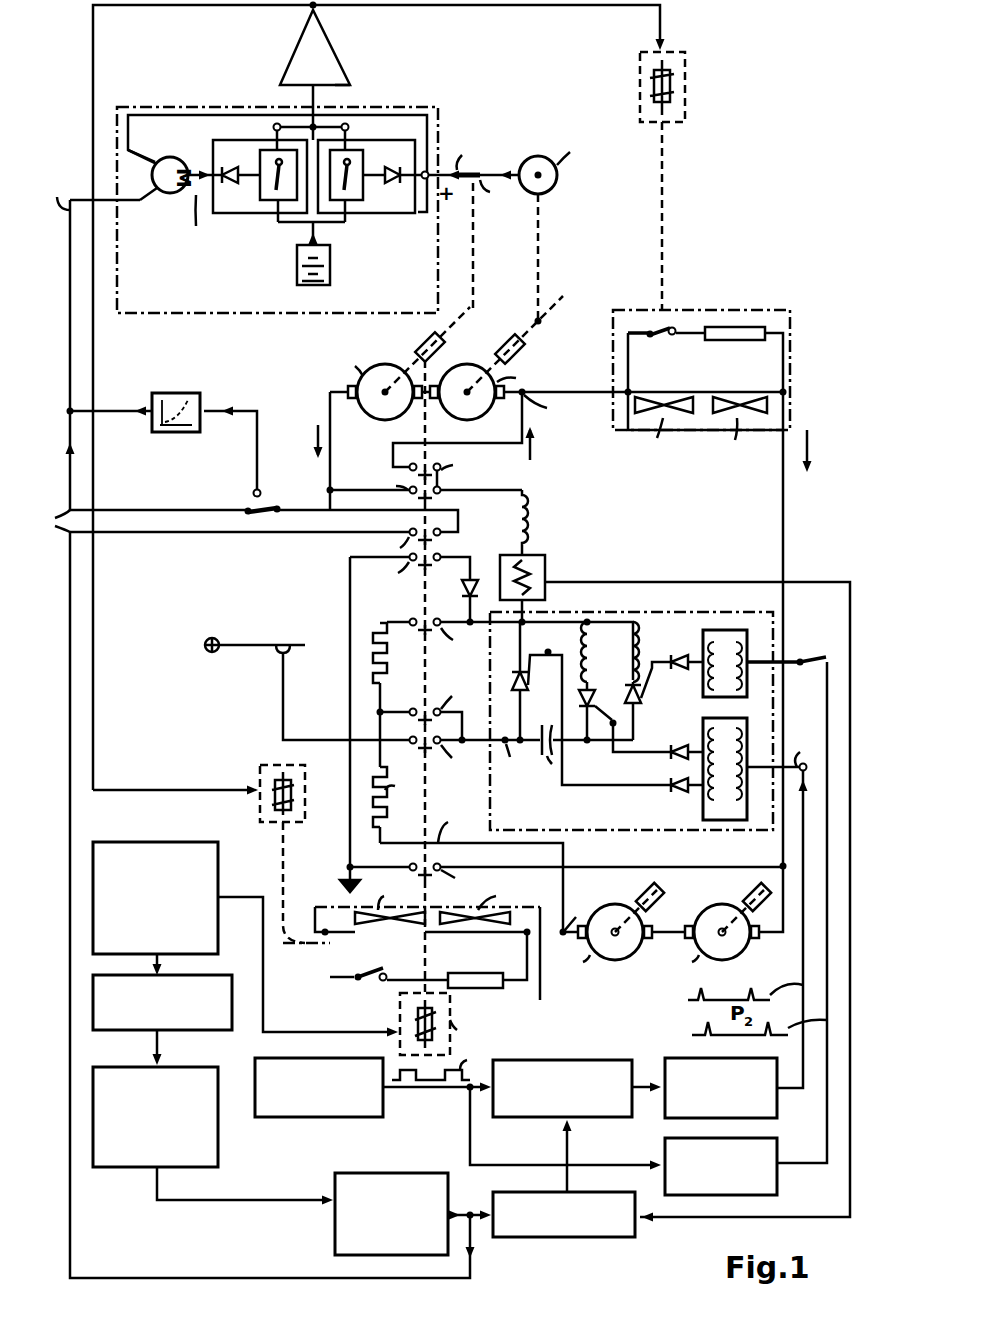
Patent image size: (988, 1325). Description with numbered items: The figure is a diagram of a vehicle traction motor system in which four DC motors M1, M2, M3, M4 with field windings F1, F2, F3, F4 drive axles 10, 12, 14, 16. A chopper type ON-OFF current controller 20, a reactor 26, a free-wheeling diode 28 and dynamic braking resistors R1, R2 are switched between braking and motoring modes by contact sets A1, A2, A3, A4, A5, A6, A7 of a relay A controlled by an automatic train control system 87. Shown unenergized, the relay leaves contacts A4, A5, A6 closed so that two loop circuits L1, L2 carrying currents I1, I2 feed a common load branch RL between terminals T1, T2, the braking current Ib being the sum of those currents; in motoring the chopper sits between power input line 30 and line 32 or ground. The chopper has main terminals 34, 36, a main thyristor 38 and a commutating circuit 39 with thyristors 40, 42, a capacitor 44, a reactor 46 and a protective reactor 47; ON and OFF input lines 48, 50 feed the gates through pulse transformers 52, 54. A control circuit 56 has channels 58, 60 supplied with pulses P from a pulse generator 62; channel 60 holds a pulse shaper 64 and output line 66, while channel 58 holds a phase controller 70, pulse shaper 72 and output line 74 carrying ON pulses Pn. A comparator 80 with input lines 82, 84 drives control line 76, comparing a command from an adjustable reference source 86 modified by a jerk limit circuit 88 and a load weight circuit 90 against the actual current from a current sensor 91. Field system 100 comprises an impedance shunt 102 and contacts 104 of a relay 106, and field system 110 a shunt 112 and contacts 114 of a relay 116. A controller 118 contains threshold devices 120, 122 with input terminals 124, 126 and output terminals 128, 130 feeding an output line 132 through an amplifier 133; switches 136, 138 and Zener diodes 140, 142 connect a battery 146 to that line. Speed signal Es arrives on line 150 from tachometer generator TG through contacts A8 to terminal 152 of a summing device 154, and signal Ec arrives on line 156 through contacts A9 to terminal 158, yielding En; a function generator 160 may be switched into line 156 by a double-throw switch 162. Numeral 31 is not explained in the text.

The driving axle 10 is at (423, 340).
The driving axle 12 is at (528, 338).
The driving axle 14 is at (640, 888).
The driving axle 16 is at (745, 888).
The chopper type ON-OFF current controller 20 is at (626, 612).
The reactor 26 is at (530, 512).
The diode 28 is at (474, 578).
The power input line 30 is at (283, 692).
The push button 31 is at (250, 645).
The power input line 32 is at (353, 866).
The main terminal 34 is at (527, 625).
The main terminal 36 is at (511, 760).
The thyristor 38 is at (526, 686).
The commutating circuit 39 is at (599, 768).
The thyristor 40 is at (637, 706).
The thyristor 42 is at (592, 700).
The capacitor 44 is at (586, 755).
The reactor 46 is at (593, 656).
The protective reactor 47 is at (640, 656).
The ON input line 48 is at (808, 767).
The OFF input line 50 is at (810, 665).
The pulse transformer 52 is at (703, 808).
The pulse transformer 54 is at (703, 682).
The control circuit 56 is at (689, 1243).
The channel 58 is at (651, 1127).
The channel 60 is at (565, 1128).
The pulse generator 62 is at (302, 1117).
The pulse shaper 64 is at (777, 1182).
The output line 66 is at (826, 1156).
The phase controller 70 is at (588, 1060).
The pulse shaper 72 is at (700, 1058).
The output line 74 is at (790, 1090).
The control line 76 is at (566, 1160).
The comparator 80 is at (545, 1240).
The input line 82 is at (484, 1214).
The input line 84 is at (650, 1222).
The adjustable reference signal source 86 is at (186, 1030).
The automatic train control system 87 is at (196, 826).
The jerk limit circuit 88 is at (218, 1148).
The load weight circuit 90 is at (410, 1173).
The current sensor 91 is at (545, 566).
The field system 100 is at (790, 360).
The impedance shunt 102 is at (740, 332).
The contacts 104 is at (675, 332).
The relay 106 is at (688, 84).
The field system 110 is at (314, 972).
The impedance shunt 112 is at (478, 973).
The contacts 114 is at (364, 988).
The relay 116 is at (255, 788).
The controller 118 is at (230, 313).
The threshold response control device 120 is at (403, 140).
The threshold response control device 122 is at (222, 140).
The control input terminal 124 is at (425, 182).
The control input terminal 126 is at (199, 172).
The output terminal 128 is at (349, 127).
The output terminal 130 is at (273, 128).
The output line 132 is at (350, 88).
The amplifier 133 is at (296, 57).
The signal controlled switch 136 is at (346, 205).
The signal controlled switch 138 is at (271, 205).
The Zener diode 140 is at (396, 190).
The Zener diode 142 is at (228, 192).
The battery 146 is at (332, 278).
The line 150 is at (500, 172).
The input terminal 152 is at (148, 156).
The summing device 154 is at (160, 190).
The line 156 is at (242, 520).
The input terminal 158 is at (145, 204).
The function generator 160 is at (198, 398).
The double-throw switch 162 is at (252, 496).
The DC motor M1 is at (376, 386).
The DC motor M2 is at (490, 392).
The DC motor M3 is at (620, 938).
The DC motor M4 is at (712, 938).
The field winding F1 is at (664, 427).
The field winding F2 is at (739, 427).
The field winding F3 is at (390, 903).
The field winding F4 is at (482, 903).
The contact set A1 is at (445, 489).
The contact set A2 is at (410, 572).
The contact set A3 is at (566, 879).
The contact set A4 is at (447, 470).
The contact set A5 is at (454, 636).
The contact set A6 is at (428, 707).
The contact set A7 is at (475, 758).
The normally closed contacts A8 is at (500, 192).
The normally closed contacts A9 is at (408, 546).
The dynamic braking resistor R1 is at (396, 695).
The dynamic braking resistor R2 is at (396, 805).
The load branch RL is at (471, 871).
The terminal T1 is at (550, 408).
The terminal T2 is at (578, 916).
The tachometer generator TG is at (578, 155).
The loop circuit L1 is at (363, 451).
The loop circuit L2 is at (691, 493).
The loop current I1 is at (309, 441).
The loop current I2 is at (817, 451).
The braking current Ib is at (543, 447).
The braking current request signal Ec is at (57, 191).
The speed signal Es is at (471, 151).
The summing device output En is at (193, 224).
The relay A is at (437, 1024).
The constant frequency pulses P is at (437, 1061).
The ON pulses Pn is at (745, 981).